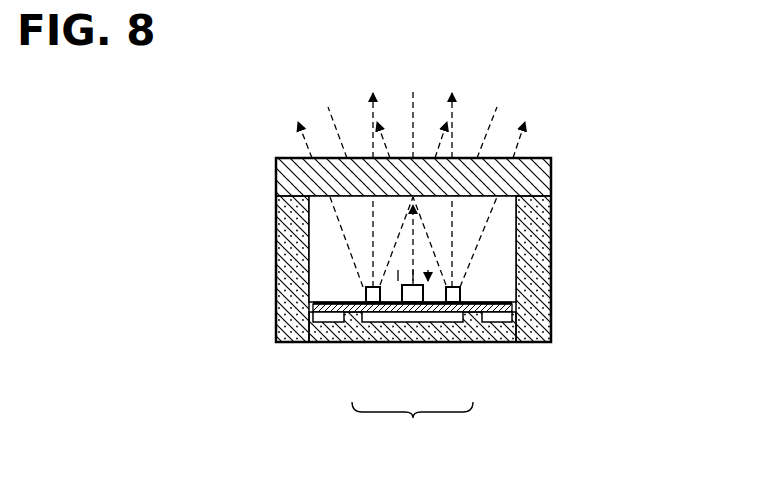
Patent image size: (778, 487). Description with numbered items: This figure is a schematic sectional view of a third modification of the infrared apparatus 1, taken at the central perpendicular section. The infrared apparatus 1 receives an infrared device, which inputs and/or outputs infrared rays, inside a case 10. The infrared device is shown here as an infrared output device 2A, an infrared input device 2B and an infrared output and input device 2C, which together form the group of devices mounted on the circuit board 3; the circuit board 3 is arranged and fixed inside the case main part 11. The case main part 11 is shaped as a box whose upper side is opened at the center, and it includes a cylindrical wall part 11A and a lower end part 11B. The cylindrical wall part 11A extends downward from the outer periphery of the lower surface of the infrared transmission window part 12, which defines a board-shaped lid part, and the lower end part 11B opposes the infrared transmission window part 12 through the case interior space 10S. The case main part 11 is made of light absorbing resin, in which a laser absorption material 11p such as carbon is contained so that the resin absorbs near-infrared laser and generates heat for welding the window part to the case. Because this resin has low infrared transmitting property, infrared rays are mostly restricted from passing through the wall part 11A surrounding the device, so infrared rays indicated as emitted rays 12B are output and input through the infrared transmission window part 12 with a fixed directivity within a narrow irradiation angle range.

The infrared apparatus 1 is at (255, 120).
The case 10 is at (546, 150).
The case interior space 10S is at (473, 220).
The case main part 11 is at (276, 342).
The wall part 11A is at (276, 275).
The lower end part 11B is at (323, 342).
The laser absorption material 11p is at (552, 342).
The infrared transmission window part 12 is at (276, 182).
The emitted light 12B is at (365, 158).
The infrared output device 2A is at (372, 313).
The infrared input device 2B is at (418, 313).
The infrared output and input device 2C is at (412, 427).
The circuit board 3 is at (504, 313).